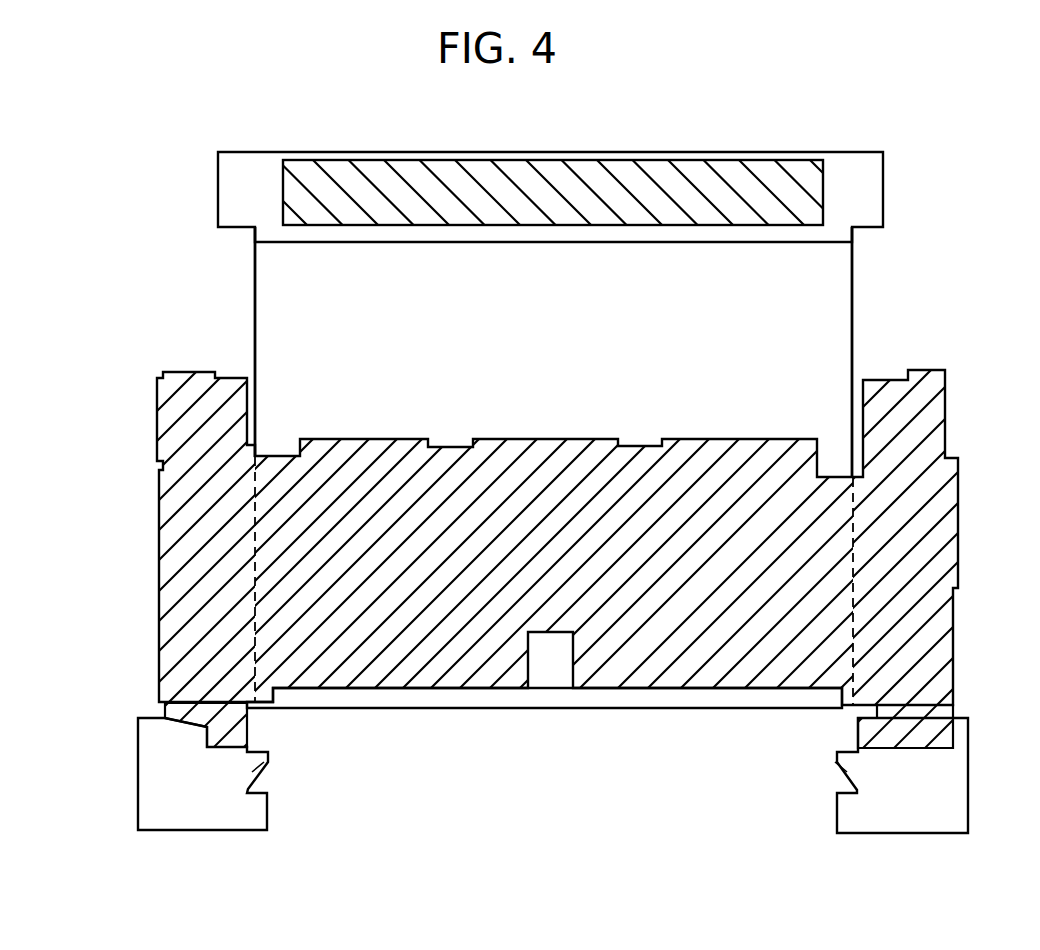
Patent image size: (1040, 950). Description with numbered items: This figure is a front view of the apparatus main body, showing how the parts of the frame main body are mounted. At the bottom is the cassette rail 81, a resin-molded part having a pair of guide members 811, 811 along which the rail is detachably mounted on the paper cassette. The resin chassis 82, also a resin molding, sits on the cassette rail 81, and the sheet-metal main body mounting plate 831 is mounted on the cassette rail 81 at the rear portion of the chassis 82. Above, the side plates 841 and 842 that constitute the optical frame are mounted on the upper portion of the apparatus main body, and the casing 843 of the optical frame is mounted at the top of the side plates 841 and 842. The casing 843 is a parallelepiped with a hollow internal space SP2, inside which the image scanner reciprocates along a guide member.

The internal space SP2 is at (872, 198).
The casing 843 is at (590, 152).
The side plate 841 is at (254, 320).
The side plate 842 is at (853, 317).
The resin chassis 82 is at (943, 650).
The main body mounting plate 831 is at (542, 710).
The guide member 811 is at (272, 783).
The cassette rail 81 is at (193, 818).